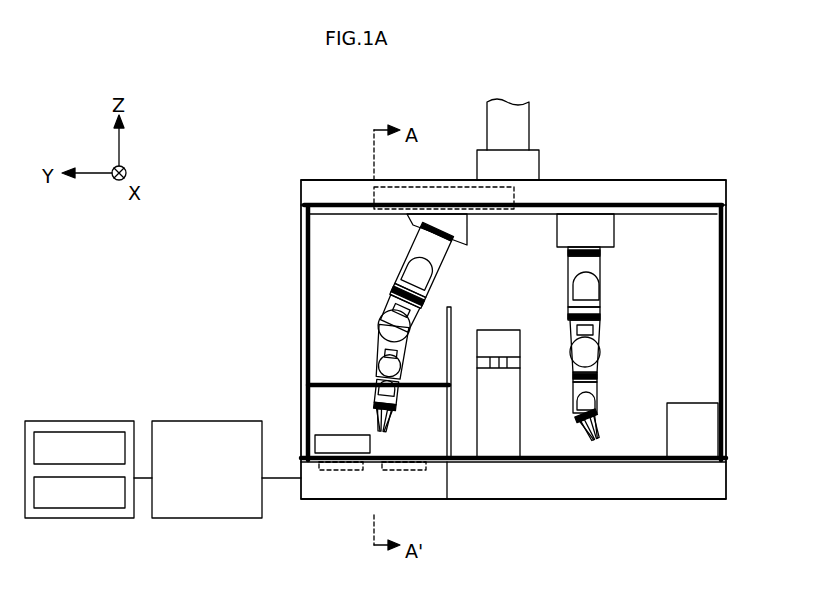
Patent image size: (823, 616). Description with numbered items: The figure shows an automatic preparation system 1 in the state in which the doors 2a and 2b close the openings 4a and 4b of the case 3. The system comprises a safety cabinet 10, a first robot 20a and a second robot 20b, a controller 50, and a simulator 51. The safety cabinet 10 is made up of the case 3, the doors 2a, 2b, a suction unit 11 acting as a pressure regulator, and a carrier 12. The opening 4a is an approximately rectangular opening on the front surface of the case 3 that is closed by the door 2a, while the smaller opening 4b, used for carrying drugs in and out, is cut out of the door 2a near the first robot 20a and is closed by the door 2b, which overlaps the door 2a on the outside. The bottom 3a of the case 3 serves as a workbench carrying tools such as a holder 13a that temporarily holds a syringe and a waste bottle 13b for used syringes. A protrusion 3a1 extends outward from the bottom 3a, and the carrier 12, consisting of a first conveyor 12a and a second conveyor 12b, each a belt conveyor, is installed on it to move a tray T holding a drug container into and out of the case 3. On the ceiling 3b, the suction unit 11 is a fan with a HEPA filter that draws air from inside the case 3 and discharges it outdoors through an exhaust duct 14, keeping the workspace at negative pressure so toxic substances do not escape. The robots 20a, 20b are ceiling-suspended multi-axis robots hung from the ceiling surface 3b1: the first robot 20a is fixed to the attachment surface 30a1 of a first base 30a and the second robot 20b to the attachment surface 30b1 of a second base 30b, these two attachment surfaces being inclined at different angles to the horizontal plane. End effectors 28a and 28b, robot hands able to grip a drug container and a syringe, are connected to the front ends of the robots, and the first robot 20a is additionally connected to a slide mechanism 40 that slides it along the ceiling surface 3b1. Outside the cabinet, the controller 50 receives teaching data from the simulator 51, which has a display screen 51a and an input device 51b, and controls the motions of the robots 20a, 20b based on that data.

The automatic preparation system 1 is at (270, 138).
The safety cabinet 10 is at (314, 162).
The door 2a is at (648, 205).
The door 2b is at (310, 385).
The case 3 is at (694, 168).
The bottom 3a is at (716, 480).
The protrusion 3a1 is at (435, 490).
The ceiling 3b is at (716, 186).
The ceiling surface 3b1 is at (698, 216).
The opening 4a is at (667, 340).
The opening 4b is at (435, 438).
The suction unit 11 is at (540, 165).
The carrier 12 is at (362, 541).
The first conveyor 12a is at (335, 470).
The second conveyor 12b is at (395, 470).
The holder 13a is at (503, 330).
The waste bottle 13b is at (690, 403).
The exhaust duct 14 is at (530, 130).
The first robot 20a is at (458, 270).
The second robot 20b is at (612, 290).
The end effector 28a is at (376, 428).
The end effector 28b is at (582, 440).
The first base 30a is at (468, 232).
The attachment surface 30a1 is at (418, 229).
The second base 30b is at (614, 228).
The attachment surface 30b1 is at (602, 252).
The slide mechanism 40 is at (444, 187).
The controller 50 is at (206, 421).
The simulator 51 is at (97, 421).
The display screen 51a is at (47, 432).
The input device 51b is at (50, 508).
The tray T is at (315, 440).